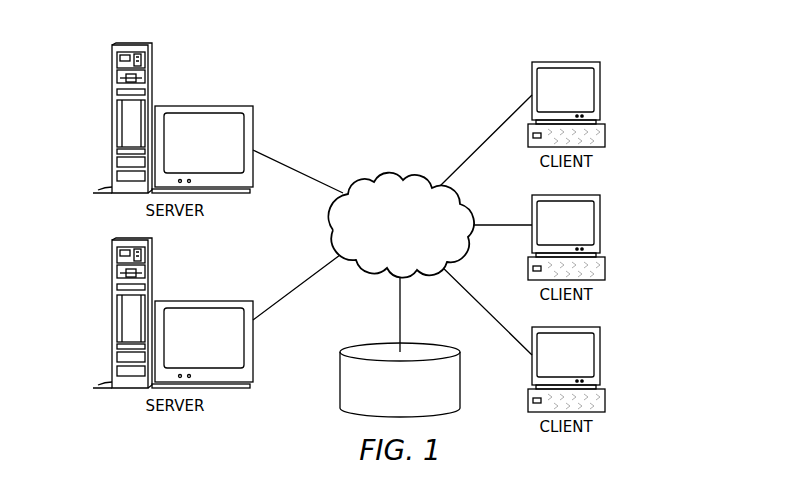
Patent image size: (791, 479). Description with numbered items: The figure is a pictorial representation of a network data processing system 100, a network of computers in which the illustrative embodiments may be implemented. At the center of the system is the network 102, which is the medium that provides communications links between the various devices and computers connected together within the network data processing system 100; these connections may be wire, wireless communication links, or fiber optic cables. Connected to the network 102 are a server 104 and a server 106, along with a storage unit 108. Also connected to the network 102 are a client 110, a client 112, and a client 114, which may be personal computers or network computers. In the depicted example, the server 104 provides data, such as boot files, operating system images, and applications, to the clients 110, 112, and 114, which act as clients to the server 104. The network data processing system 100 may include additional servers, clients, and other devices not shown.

The network data processing system 100 is at (445, 83).
The network 102 is at (372, 180).
The server 104 is at (112, 118).
The server 106 is at (112, 315).
The storage unit 108 is at (340, 390).
The client 110 is at (600, 92).
The client 112 is at (600, 225).
The client 114 is at (600, 355).